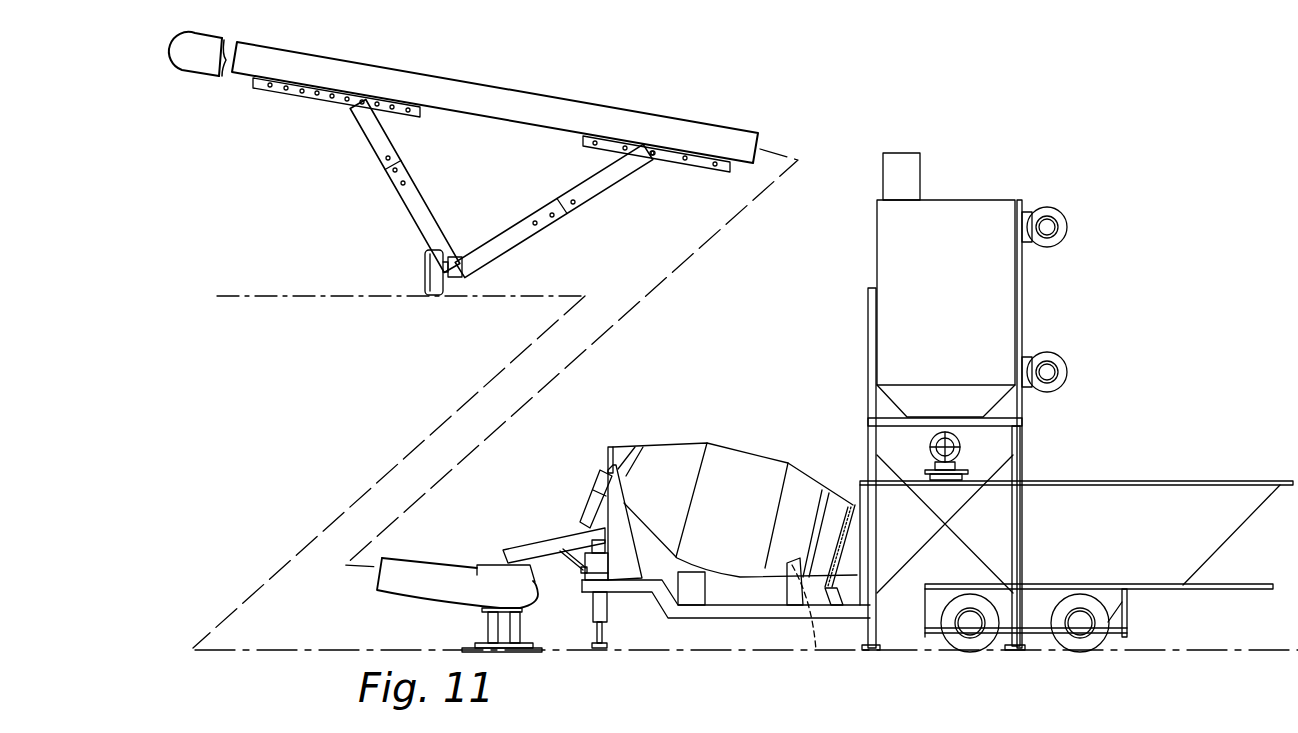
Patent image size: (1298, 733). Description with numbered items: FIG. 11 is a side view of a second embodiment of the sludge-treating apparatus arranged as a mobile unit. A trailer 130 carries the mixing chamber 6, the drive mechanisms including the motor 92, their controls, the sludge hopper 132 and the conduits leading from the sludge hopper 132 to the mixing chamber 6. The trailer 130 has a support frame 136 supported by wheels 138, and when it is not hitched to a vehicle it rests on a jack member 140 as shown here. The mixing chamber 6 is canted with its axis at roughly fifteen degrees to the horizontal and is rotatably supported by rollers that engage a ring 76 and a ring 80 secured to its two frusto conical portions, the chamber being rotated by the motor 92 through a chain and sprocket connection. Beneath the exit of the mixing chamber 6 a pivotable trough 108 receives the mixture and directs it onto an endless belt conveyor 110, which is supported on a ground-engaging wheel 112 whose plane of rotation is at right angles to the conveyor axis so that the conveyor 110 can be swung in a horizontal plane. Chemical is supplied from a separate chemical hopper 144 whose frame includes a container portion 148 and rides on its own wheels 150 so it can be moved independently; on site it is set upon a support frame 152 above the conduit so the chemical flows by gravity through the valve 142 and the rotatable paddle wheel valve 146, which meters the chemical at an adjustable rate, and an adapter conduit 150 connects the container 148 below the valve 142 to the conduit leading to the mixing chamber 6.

The mixing chamber 6 is at (738, 442).
The ring 76 is at (822, 490).
The ring 80 is at (638, 447).
The motor 92 is at (816, 650).
The trough 108 is at (515, 550).
The endless belt conveyor 110 is at (514, 98).
The ground-engaging wheel 112 is at (432, 297).
The trailer 130 is at (750, 620).
The sludge hopper 132 is at (1188, 482).
The support frame 136 is at (700, 612).
The wheels 138 is at (962, 646).
The jack member 140 is at (605, 615).
The valve 142 is at (962, 450).
The chemical hopper 144 is at (872, 252).
The rotatable paddle wheel valve 146 is at (942, 432).
The container portion 148 is at (952, 212).
The wheels 150 is at (1067, 225).
The support frame 152 is at (1022, 546).